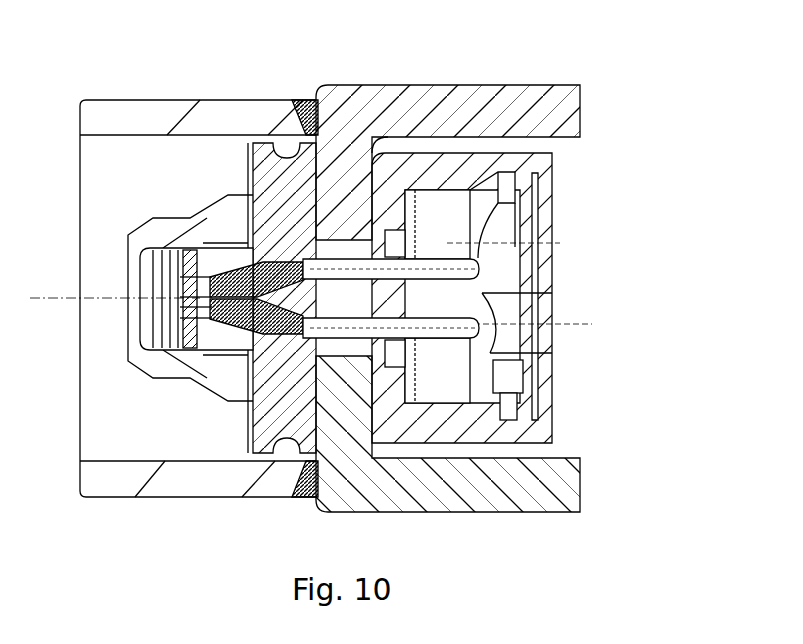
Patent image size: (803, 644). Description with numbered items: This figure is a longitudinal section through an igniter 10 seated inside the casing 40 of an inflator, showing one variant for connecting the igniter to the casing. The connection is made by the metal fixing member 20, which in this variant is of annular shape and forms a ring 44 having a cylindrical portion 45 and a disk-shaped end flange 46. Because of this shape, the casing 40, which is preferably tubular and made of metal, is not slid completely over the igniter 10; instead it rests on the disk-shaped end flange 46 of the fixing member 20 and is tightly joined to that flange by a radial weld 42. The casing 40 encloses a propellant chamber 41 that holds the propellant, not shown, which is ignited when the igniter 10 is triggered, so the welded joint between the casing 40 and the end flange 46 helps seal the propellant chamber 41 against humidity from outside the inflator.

The igniter 10 is at (566, 213).
The fixing member 20 is at (495, 102).
The cylindrical portion 45 is at (495, 102).
The casing 40 is at (153, 117).
The propellant chamber 41 is at (163, 200).
The radial weld 42 is at (307, 100).
The ring 44 is at (453, 492).
The disk-shaped end flange 46 is at (327, 420).